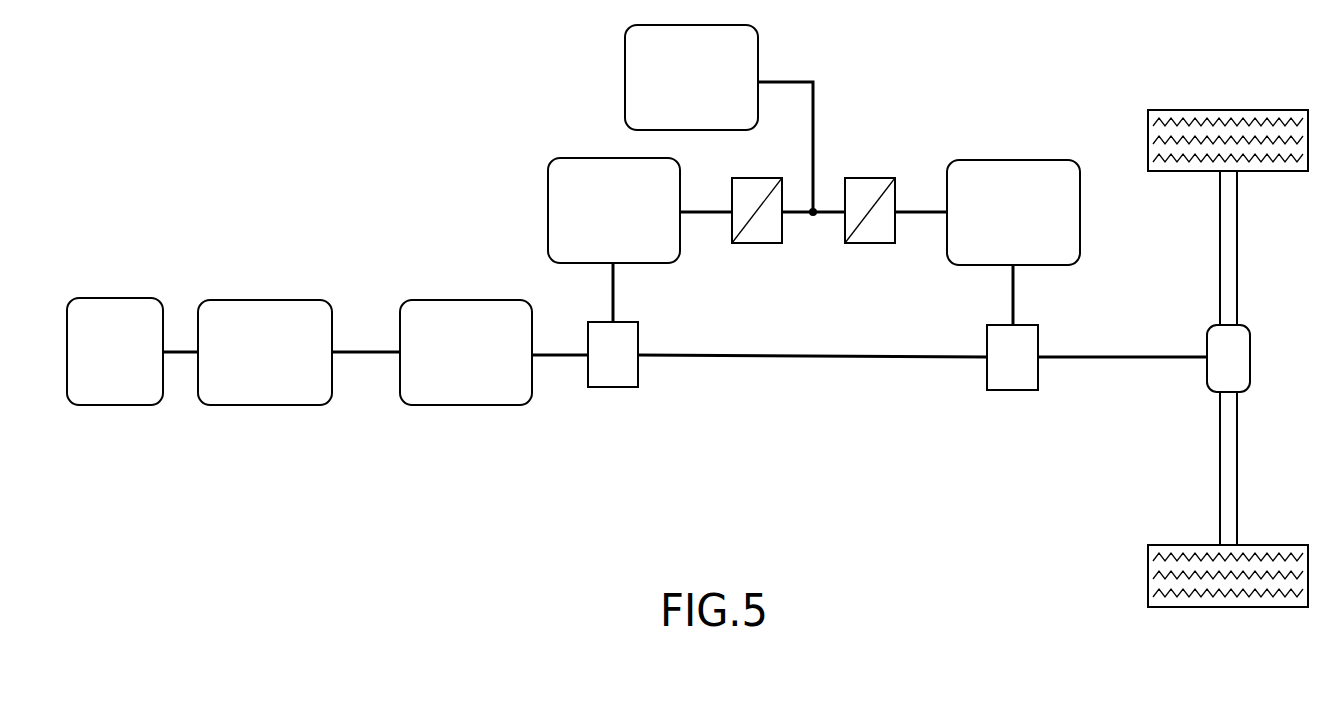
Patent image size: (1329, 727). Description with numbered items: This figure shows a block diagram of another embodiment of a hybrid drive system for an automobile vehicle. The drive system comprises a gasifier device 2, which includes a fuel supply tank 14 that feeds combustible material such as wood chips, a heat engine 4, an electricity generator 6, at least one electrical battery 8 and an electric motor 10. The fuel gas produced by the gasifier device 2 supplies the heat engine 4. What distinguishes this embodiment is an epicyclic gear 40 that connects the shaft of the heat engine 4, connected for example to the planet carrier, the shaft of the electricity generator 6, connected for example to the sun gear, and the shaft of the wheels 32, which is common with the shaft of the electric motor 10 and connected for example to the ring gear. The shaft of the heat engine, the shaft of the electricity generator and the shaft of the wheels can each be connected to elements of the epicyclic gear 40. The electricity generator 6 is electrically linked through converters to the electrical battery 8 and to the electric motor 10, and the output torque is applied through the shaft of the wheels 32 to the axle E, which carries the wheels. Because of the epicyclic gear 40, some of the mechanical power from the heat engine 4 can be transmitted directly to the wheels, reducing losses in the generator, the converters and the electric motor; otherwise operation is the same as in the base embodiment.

The fuel supply tank 14 is at (115, 390).
The gasifier device 2 is at (275, 390).
The heat engine 4 is at (463, 390).
The electricity generator 6 is at (557, 188).
The electrical battery 8 is at (632, 68).
The electric motor 10 is at (1017, 172).
The epicyclic gear 40 is at (613, 389).
The shaft of the wheels 32 is at (1137, 365).
The axle E is at (1232, 220).